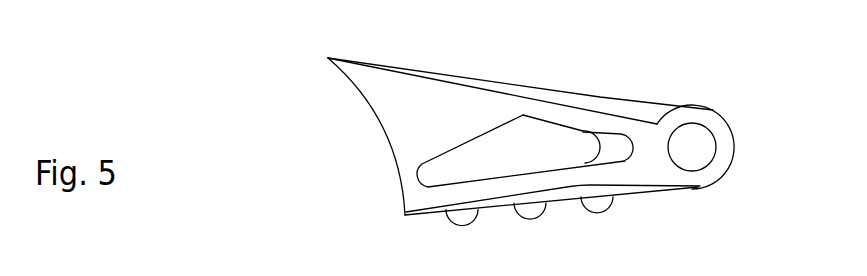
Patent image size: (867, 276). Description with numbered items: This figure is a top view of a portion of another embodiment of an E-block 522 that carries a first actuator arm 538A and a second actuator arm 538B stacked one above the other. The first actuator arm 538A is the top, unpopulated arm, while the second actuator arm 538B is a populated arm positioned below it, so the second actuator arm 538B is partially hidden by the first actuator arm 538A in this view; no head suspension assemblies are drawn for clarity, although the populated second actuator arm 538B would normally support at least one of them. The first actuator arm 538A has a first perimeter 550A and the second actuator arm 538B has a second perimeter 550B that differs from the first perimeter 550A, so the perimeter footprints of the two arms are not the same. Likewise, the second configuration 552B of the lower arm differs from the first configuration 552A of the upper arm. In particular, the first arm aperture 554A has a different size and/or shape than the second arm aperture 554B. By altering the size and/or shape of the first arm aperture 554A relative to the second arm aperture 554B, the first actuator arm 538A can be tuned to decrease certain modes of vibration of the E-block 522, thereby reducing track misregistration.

The E-block 522 is at (446, 58).
The first perimeter 550A is at (530, 98).
The second perimeter 550B is at (617, 99).
The first actuator arm 538A is at (658, 132).
The second actuator arm 538B is at (642, 115).
The first configuration 552A is at (600, 155).
The second configuration 552B is at (463, 171).
The first arm aperture 554A is at (700, 187).
The second arm aperture 554B is at (513, 165).